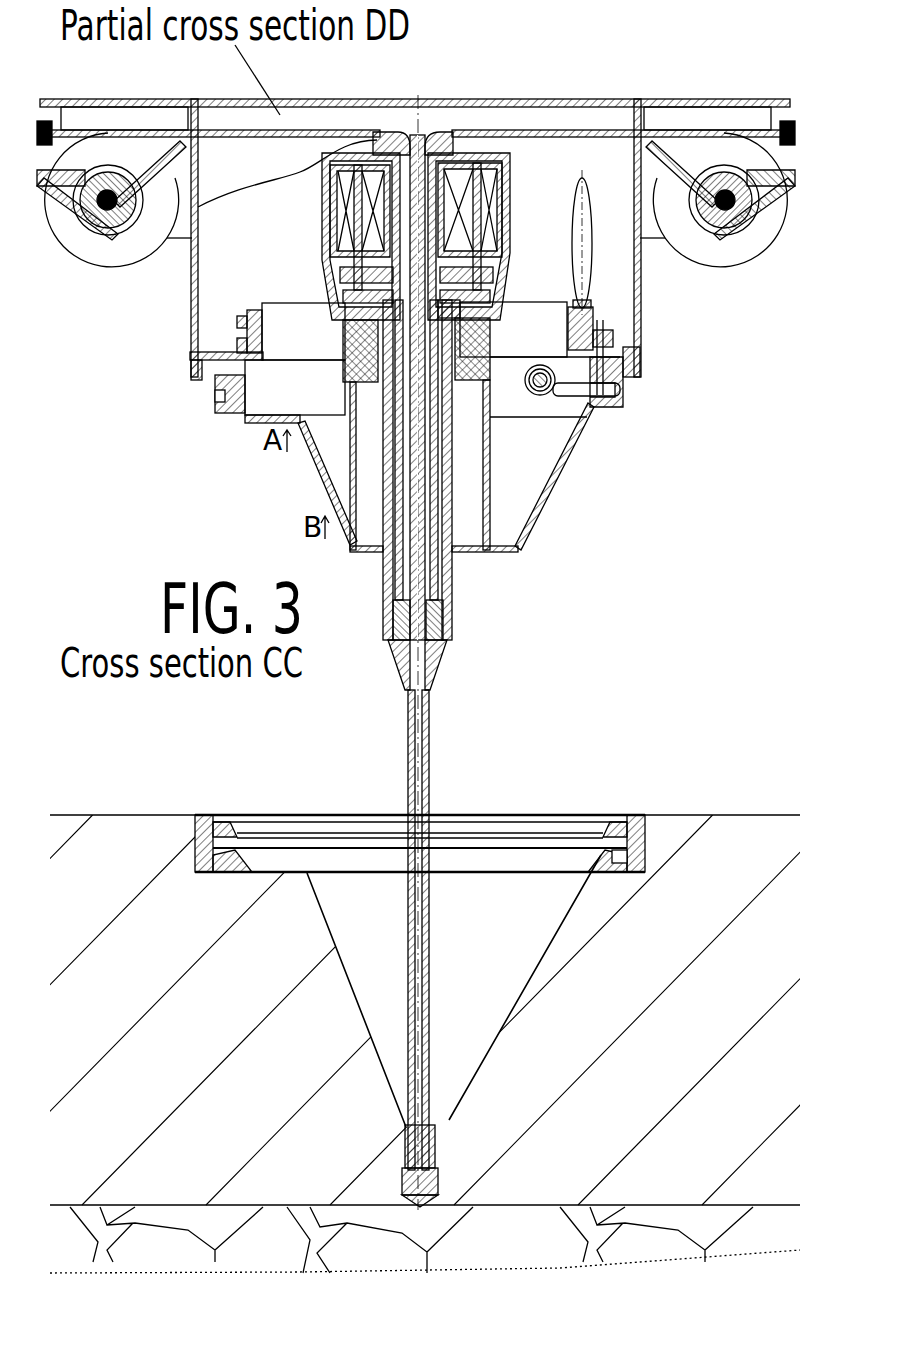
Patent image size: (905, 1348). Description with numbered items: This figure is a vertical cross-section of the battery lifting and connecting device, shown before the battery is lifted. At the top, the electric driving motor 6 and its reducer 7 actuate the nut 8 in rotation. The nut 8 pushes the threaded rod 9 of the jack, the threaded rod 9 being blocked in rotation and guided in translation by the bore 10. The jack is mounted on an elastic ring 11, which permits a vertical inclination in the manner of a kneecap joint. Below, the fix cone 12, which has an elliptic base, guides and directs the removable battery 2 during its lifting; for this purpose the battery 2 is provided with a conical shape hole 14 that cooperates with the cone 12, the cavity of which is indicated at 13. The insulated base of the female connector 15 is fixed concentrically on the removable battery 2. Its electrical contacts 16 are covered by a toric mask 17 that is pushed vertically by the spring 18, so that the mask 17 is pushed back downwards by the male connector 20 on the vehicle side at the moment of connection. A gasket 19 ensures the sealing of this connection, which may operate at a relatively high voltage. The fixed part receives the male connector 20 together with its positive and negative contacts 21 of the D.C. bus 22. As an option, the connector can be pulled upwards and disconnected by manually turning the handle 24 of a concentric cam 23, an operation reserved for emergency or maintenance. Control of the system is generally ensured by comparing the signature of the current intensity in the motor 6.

The removable battery 2 is at (760, 815).
The electric driving motor 6 is at (338, 220).
The reducer 7 is at (340, 280).
The nut 8 is at (452, 617).
The threaded rod 9 is at (407, 803).
The bore 10 is at (437, 677).
The elastic ring 11 is at (347, 362).
The fix cone 12 is at (545, 498).
The cavity 13 is at (432, 1000).
The conical shape hole 14 is at (557, 937).
The female connector 15 is at (640, 810).
The electrical contacts 16 is at (617, 867).
The toric mask 17 is at (248, 815).
The spring 18 is at (593, 837).
The gasket 19 is at (195, 812).
The male connector 20 is at (600, 405).
The positive and negative contacts 21 is at (622, 387).
The D.C. bus 22 is at (547, 397).
The concentric cam 23 is at (602, 312).
The handle 24 is at (583, 280).